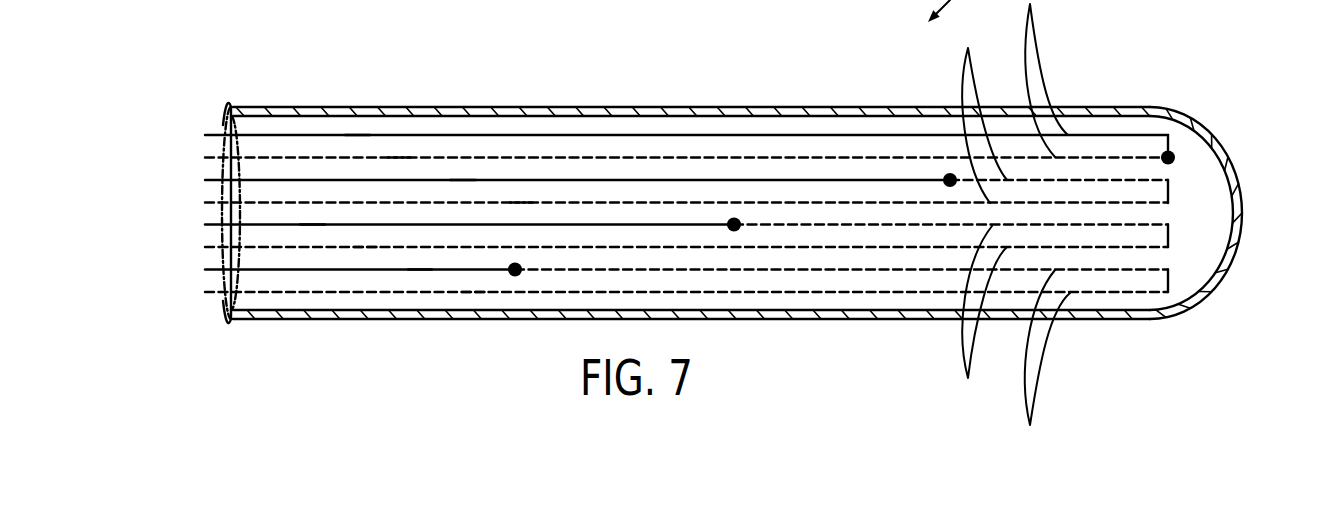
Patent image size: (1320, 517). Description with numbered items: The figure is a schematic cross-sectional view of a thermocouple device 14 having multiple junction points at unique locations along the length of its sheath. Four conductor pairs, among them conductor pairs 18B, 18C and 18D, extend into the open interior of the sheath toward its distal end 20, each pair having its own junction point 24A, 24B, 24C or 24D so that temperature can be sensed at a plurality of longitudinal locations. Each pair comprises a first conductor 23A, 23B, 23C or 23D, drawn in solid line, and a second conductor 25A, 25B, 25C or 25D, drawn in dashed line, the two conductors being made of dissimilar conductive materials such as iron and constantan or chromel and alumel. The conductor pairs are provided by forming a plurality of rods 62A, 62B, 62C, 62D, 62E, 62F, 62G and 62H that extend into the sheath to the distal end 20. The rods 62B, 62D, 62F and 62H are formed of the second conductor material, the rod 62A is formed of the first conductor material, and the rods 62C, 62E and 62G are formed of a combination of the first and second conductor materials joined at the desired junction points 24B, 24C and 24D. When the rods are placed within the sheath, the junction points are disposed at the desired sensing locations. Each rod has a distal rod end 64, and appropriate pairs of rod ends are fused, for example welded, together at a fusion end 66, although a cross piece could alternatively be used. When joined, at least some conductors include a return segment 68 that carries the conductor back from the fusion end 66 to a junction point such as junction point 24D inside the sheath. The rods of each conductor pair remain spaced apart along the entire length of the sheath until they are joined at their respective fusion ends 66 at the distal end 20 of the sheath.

The thermocouple device 14 is at (490, 38).
The conductor pair 18B is at (979, 109).
The conductor pair 18C is at (979, 319).
The conductor pair 18D is at (1042, 364).
The distal end 20 is at (1113, 113).
The first conductor 23A is at (282, 135).
The first conductor 23B is at (212, 180).
The first conductor 23C is at (212, 224).
The first conductor 23D is at (212, 268).
The junction point 24A is at (1175, 157).
The junction point 24B is at (950, 180).
The junction point 24C is at (734, 224).
The junction point 24D is at (513, 272).
The second conductor 25A is at (212, 158).
The second conductor 25B is at (212, 202).
The second conductor 25C is at (212, 246).
The second conductor 25D is at (212, 291).
The rod 62A is at (357, 135).
The rod 62B is at (400, 157).
The rod 62C is at (463, 180).
The rod 62D is at (522, 202).
The rod 62E is at (312, 225).
The rod 62F is at (368, 248).
The rod 62G is at (420, 270).
The rod 62H is at (470, 292).
The distal rod end 64 is at (1156, 314).
The fusion end 66 is at (1175, 150).
The return segment 68 is at (742, 268).